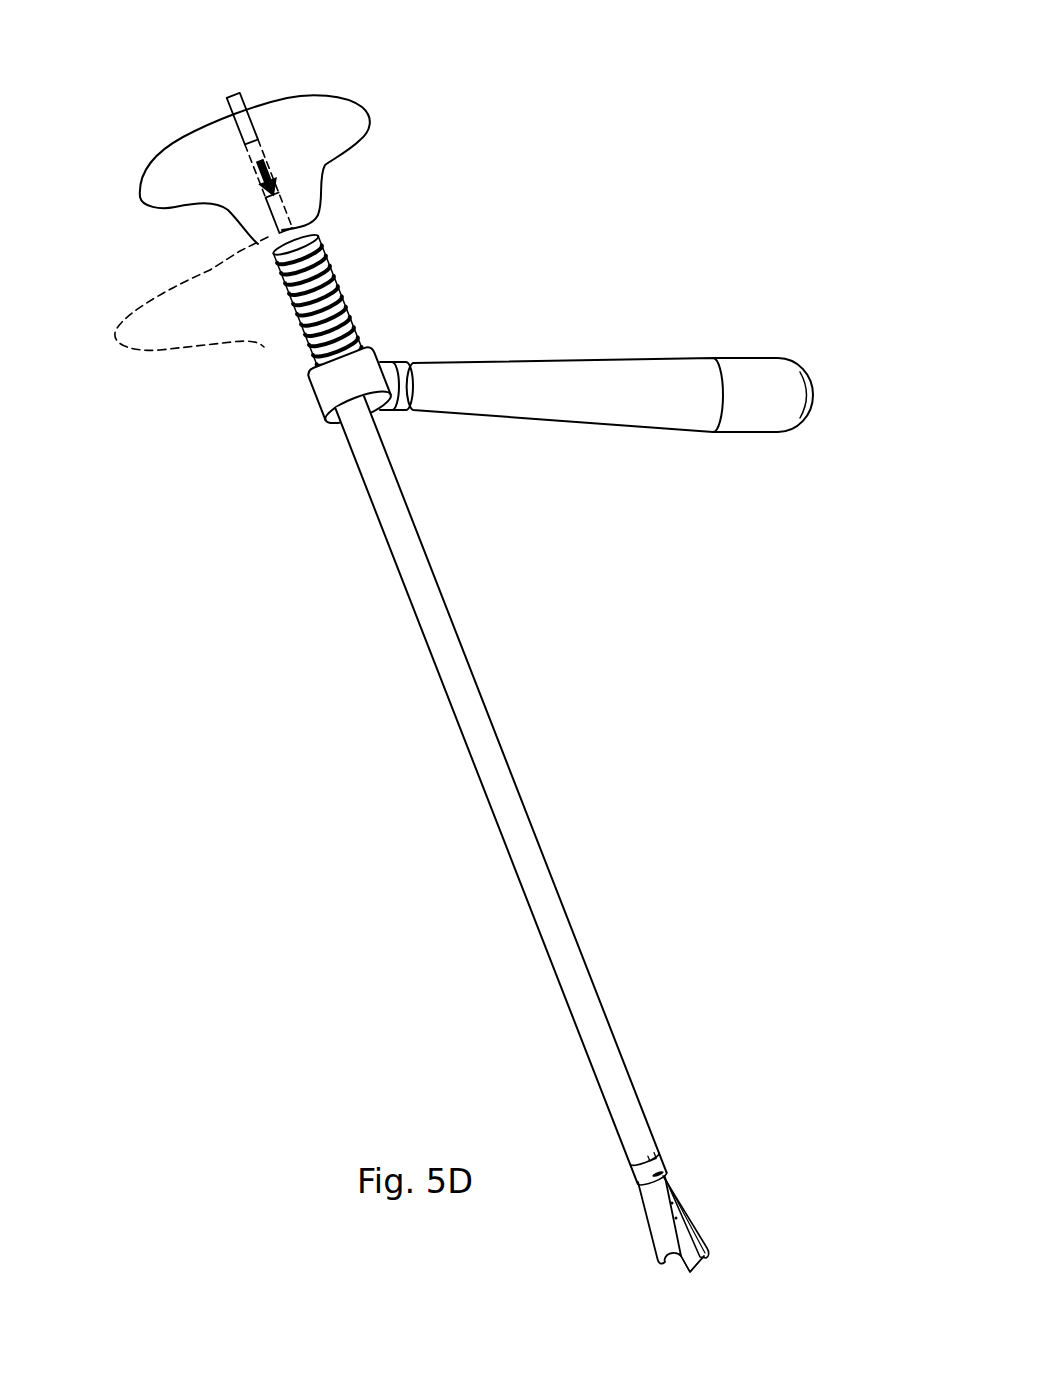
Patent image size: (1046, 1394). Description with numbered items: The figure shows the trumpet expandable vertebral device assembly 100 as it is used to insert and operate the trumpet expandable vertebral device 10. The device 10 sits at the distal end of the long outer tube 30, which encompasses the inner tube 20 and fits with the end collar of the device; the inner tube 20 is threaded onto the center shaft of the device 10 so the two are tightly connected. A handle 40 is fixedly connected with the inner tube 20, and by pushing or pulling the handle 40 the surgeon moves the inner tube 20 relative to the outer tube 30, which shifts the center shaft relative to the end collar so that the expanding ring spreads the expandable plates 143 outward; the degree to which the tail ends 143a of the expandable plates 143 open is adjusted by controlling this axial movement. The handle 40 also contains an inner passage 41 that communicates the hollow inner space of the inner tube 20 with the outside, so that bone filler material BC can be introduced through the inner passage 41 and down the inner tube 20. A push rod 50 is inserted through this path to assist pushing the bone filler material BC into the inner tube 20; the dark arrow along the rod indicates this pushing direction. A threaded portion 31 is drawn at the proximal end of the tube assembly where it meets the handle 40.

The trumpet expandable vertebral device 10 is at (660, 1207).
The inner tube 20 is at (267, 237).
The outer tube 30 is at (527, 840).
The threaded sleeve 31 is at (293, 327).
The handle 40 is at (347, 128).
The inner passage 41 is at (253, 157).
The push rod 50 is at (242, 98).
The trumpet expandable vertebral device assembly 100 is at (405, 762).
The expandable plates 143 is at (688, 1192).
The tail ends 143a is at (688, 1266).
The bone filler material BC is at (282, 163).